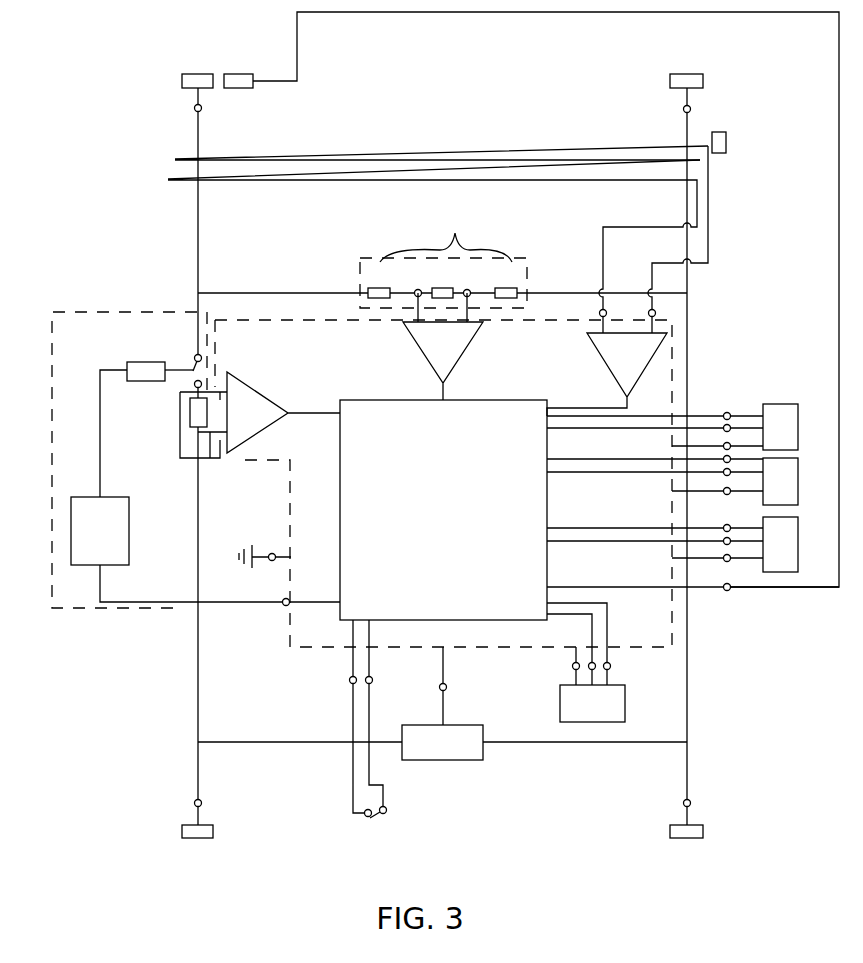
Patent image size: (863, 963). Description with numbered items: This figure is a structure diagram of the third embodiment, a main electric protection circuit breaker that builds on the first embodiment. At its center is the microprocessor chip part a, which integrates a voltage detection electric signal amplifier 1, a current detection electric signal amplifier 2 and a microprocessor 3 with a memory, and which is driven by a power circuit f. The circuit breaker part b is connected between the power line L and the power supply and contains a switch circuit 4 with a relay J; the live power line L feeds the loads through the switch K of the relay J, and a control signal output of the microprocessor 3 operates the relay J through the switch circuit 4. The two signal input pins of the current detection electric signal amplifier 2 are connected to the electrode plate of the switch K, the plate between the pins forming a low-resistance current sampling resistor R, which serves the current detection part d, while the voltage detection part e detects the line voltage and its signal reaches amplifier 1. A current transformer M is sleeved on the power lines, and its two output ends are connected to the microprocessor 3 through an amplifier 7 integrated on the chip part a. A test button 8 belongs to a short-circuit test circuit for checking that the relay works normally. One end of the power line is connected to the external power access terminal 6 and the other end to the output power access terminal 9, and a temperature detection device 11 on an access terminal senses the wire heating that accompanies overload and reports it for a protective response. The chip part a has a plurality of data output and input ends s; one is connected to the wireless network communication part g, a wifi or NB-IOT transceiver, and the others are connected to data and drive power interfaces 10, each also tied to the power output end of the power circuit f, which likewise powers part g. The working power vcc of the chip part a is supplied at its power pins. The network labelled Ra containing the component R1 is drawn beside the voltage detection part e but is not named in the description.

The voltage detection electric signal amplifier 1 is at (443, 346).
The current detection electric signal amplifier 2 is at (283, 412).
The microprocessor 3 is at (443, 510).
The switch circuit 4 is at (205, 488).
The external power access terminal 6 is at (442, 851).
The amplifier 7 is at (607, 374).
The test button 8 is at (368, 737).
The output power access terminal 9 is at (442, 63).
The data and drive power interface 10 is at (780, 488).
The temperature detection device 11 is at (531, 299).
The power line L is at (430, 228).
The current transformer M is at (447, 225).
The resistor group Ra is at (442, 253).
The voltage detection part e is at (379, 279).
The resistor R1 is at (451, 280).
The microprocessor chip part a is at (443, 483).
The circuit breaker part b is at (129, 460).
The relay J is at (160, 358).
The switch K is at (186, 367).
The low-resistance current sampling resistor R is at (182, 414).
The current detection part d is at (203, 426).
The data output and input ends s is at (680, 544).
The working power vcc is at (612, 559).
The power circuit f is at (442, 703).
The wireless network communication part g is at (592, 703).